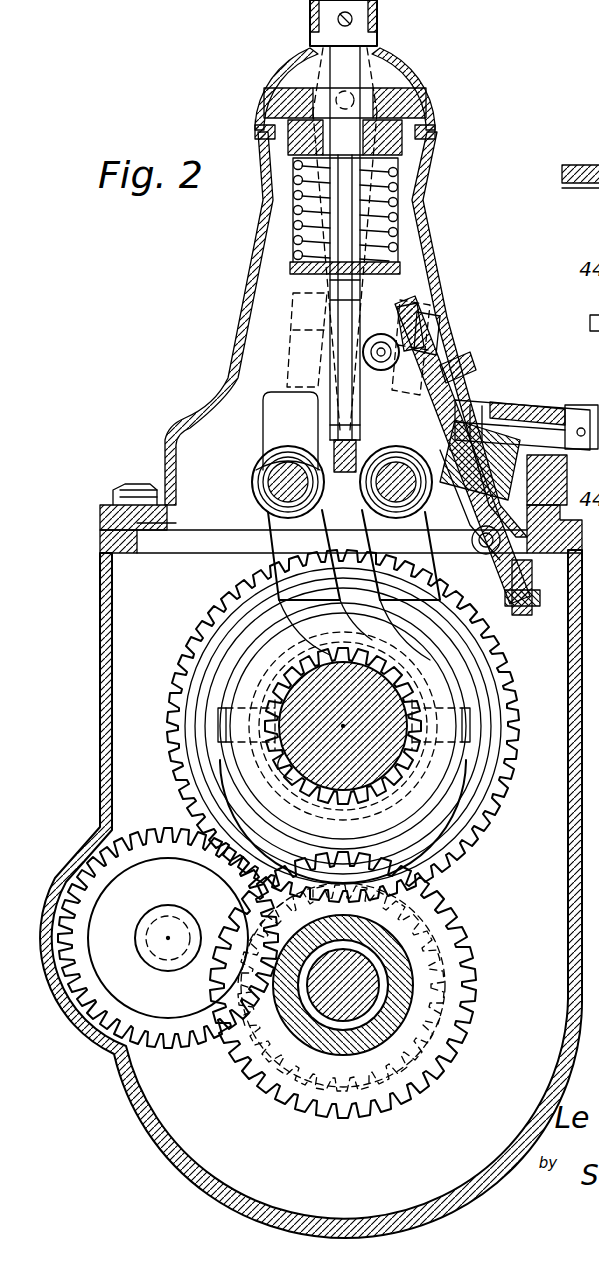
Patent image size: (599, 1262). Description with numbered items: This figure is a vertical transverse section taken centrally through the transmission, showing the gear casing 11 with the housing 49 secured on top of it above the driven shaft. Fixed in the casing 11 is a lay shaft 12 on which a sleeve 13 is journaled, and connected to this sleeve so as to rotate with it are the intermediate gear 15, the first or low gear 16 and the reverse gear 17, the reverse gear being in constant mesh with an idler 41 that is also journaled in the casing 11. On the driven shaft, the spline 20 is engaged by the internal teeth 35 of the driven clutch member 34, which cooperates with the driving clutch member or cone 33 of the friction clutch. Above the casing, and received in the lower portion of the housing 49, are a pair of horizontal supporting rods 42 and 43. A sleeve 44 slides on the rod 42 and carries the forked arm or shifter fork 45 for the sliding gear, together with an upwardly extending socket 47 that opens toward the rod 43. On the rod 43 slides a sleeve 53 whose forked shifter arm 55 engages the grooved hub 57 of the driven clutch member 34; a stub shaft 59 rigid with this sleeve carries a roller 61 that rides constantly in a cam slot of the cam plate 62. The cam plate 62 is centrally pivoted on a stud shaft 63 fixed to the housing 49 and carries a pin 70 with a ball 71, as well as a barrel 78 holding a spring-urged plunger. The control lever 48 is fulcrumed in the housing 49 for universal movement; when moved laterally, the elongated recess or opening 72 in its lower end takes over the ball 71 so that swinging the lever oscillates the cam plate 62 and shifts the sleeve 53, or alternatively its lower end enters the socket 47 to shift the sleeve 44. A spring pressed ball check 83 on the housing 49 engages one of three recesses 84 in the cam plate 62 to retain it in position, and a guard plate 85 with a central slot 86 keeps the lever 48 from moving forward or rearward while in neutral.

The gear casing 11 is at (134, 1126).
The lay shaft 12 is at (334, 1000).
The sleeve 13 is at (396, 1028).
The intermediate gear 15 is at (456, 960).
The first or low gear 16 is at (432, 1020).
The reverse gear 17 is at (436, 976).
The spline 20 is at (330, 812).
The driving clutch member or cone 33 is at (492, 792).
The driven clutch member 34 is at (408, 772).
The internal teeth 35 is at (300, 785).
The idler 41 is at (176, 1046).
The supporting rod 42 is at (268, 483).
The supporting rod 43 is at (348, 458).
The sleeve 44 is at (276, 500).
The forked arm or shifter fork 45 is at (300, 530).
The socket 47 is at (300, 418).
The control lever 48 is at (362, 68).
The housing 49 is at (264, 270).
The sleeve 53 is at (372, 494).
The forked shifter arm 55 is at (456, 702).
The grooved hub 57 is at (440, 846).
The stub shaft 59 is at (512, 412).
The roller 61 is at (458, 456).
The cam plate 62 is at (456, 362).
The stud shaft 63 is at (522, 432).
The pin 70 is at (452, 328).
The ball 71 is at (383, 346).
The recess or opening 72 is at (340, 318).
The barrel 78 is at (508, 400).
The spring pressed ball check 83 is at (448, 440).
The recesses 84 is at (442, 392).
The guard plate 85 is at (283, 470).
The slot 86 is at (292, 456).